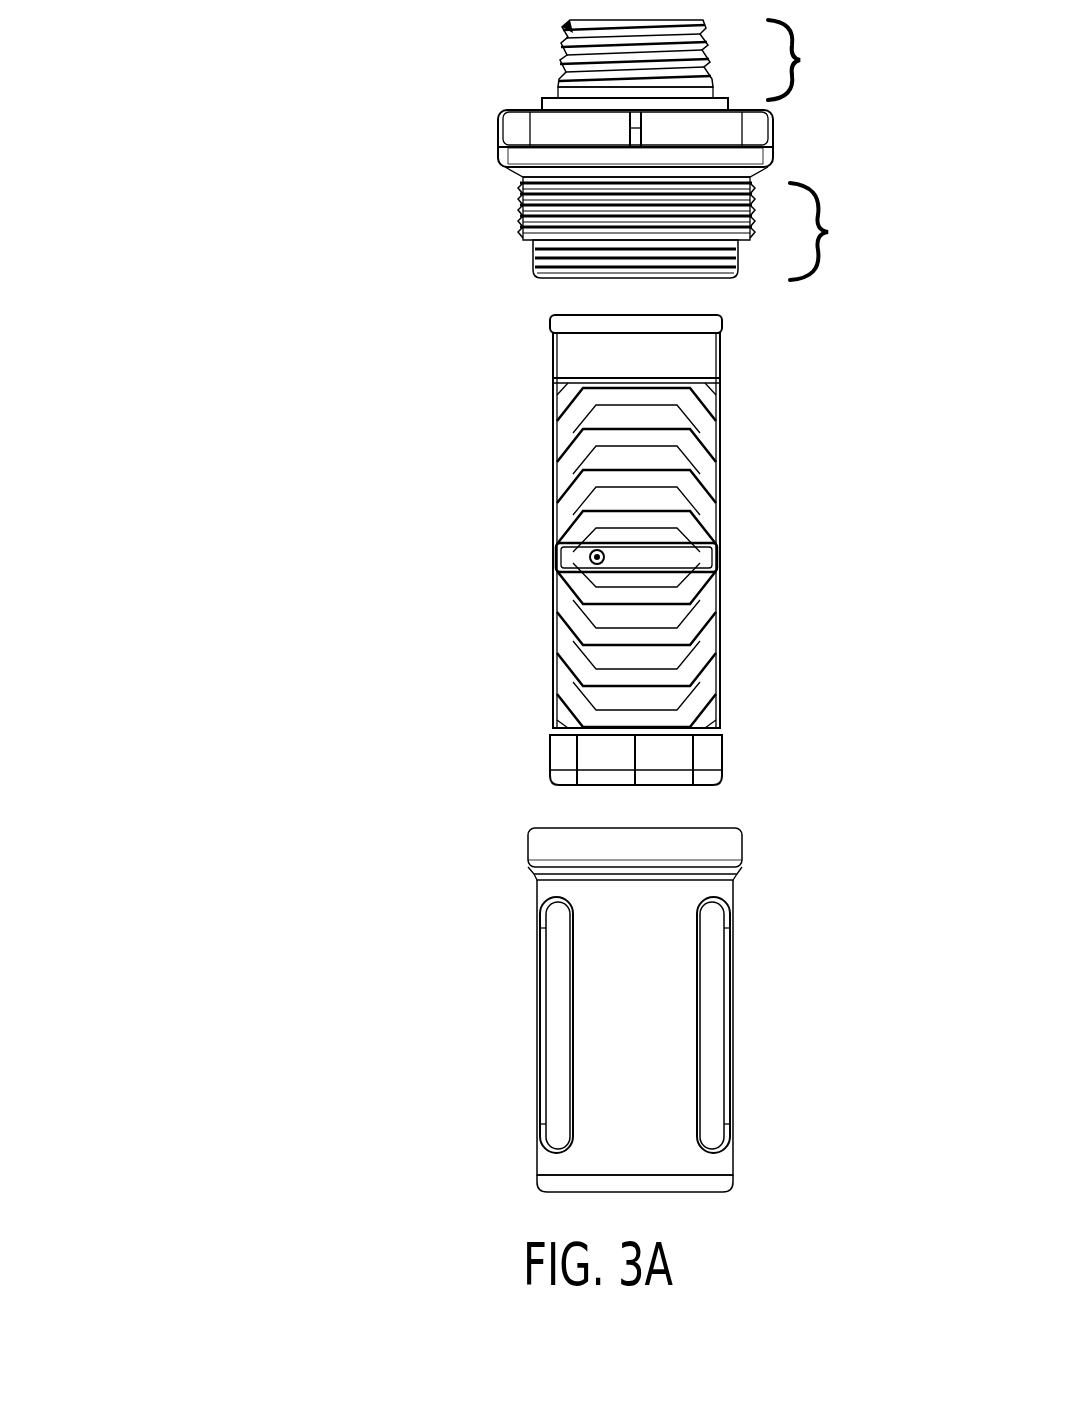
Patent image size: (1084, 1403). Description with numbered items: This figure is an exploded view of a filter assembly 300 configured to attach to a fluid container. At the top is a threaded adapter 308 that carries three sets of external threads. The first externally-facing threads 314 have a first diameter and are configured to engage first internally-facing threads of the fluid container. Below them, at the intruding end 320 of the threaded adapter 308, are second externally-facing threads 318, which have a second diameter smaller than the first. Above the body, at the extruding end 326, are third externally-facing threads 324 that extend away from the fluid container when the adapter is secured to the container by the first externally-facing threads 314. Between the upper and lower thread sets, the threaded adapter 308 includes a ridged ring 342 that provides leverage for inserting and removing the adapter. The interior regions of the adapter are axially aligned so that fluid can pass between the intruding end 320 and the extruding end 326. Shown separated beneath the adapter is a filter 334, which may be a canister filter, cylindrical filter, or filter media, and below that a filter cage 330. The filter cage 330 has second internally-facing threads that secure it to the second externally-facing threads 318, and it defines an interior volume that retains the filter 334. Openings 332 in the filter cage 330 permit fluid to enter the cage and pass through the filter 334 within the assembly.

The filter assembly 300 is at (419, 605).
The threaded adapter 308 is at (262, 112).
The first externally-facing threads 314 is at (505, 203).
The second externally-facing threads 318 is at (518, 268).
The intruding end 320 is at (856, 231).
The third externally-facing threads 324 is at (532, 52).
The extruding end 326 is at (830, 60).
The filter cage 330 is at (495, 1038).
The openings 332 is at (527, 1108).
The filter 334 is at (505, 560).
The ridged ring 342 is at (792, 139).